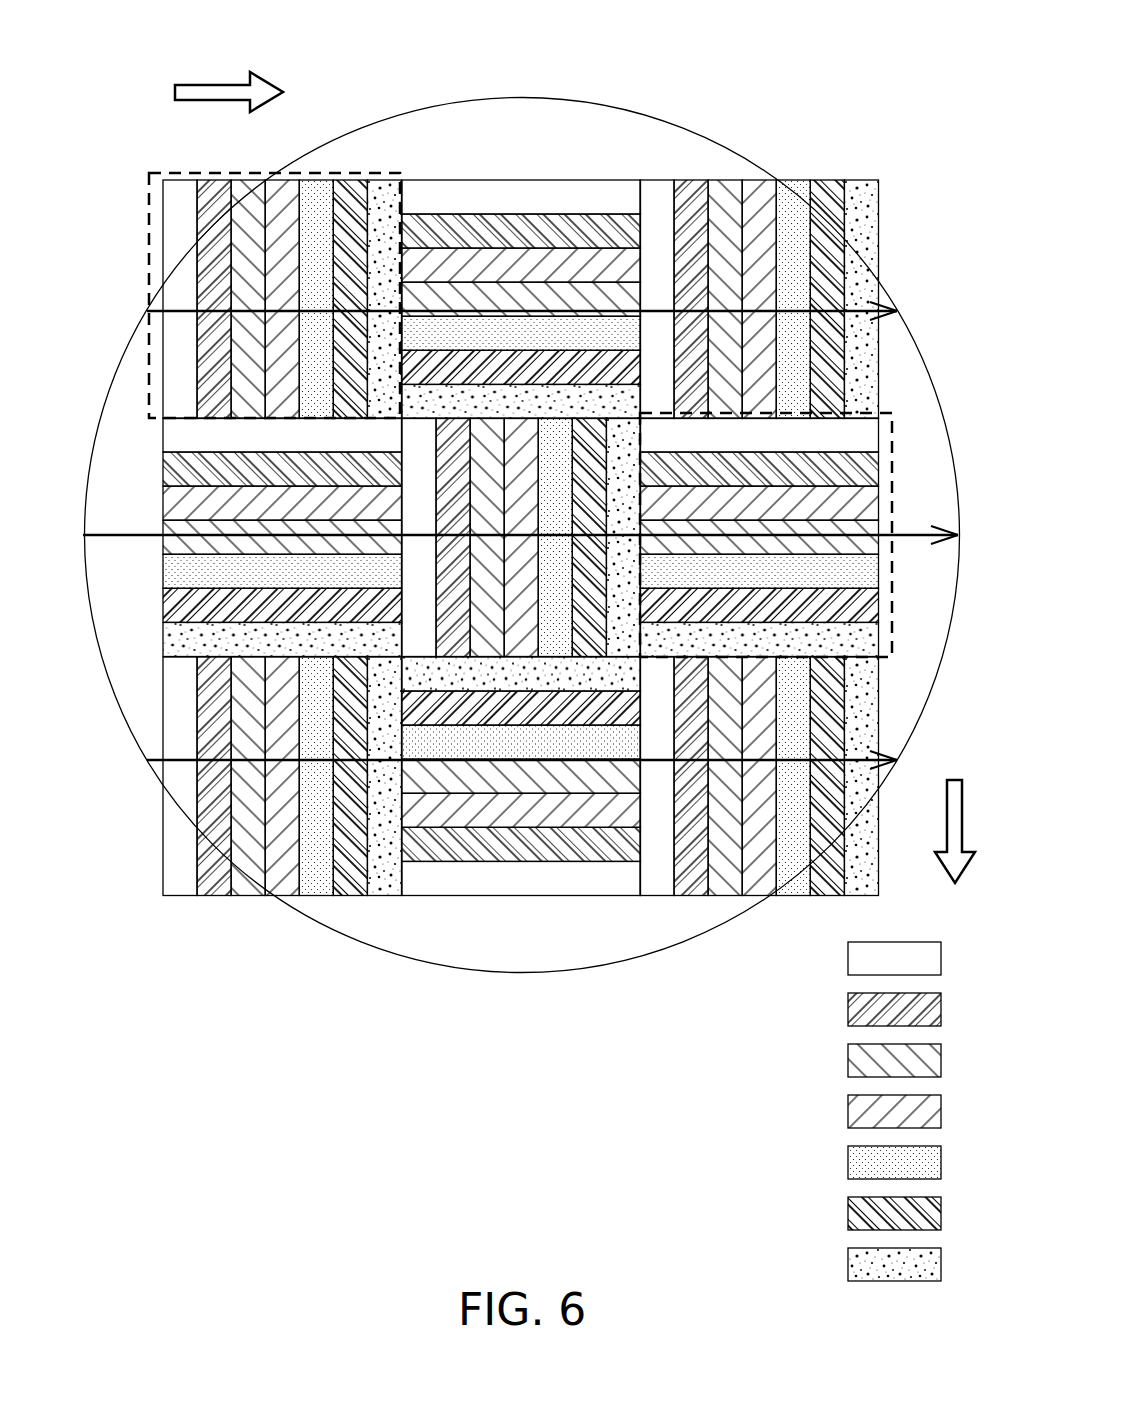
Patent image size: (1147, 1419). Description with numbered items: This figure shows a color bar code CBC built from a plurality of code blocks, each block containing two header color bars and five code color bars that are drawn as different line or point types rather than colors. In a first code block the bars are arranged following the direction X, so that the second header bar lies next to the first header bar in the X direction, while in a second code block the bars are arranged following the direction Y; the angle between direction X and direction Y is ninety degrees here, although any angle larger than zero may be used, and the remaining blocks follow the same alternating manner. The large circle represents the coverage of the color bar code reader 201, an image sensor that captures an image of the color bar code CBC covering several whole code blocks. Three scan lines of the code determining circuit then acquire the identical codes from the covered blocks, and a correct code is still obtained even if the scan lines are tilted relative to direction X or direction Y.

The color bar code reader 201 is at (520, 97).
The color bar code CBC is at (846, 165).
The direction X is at (229, 76).
The direction Y is at (946, 831).